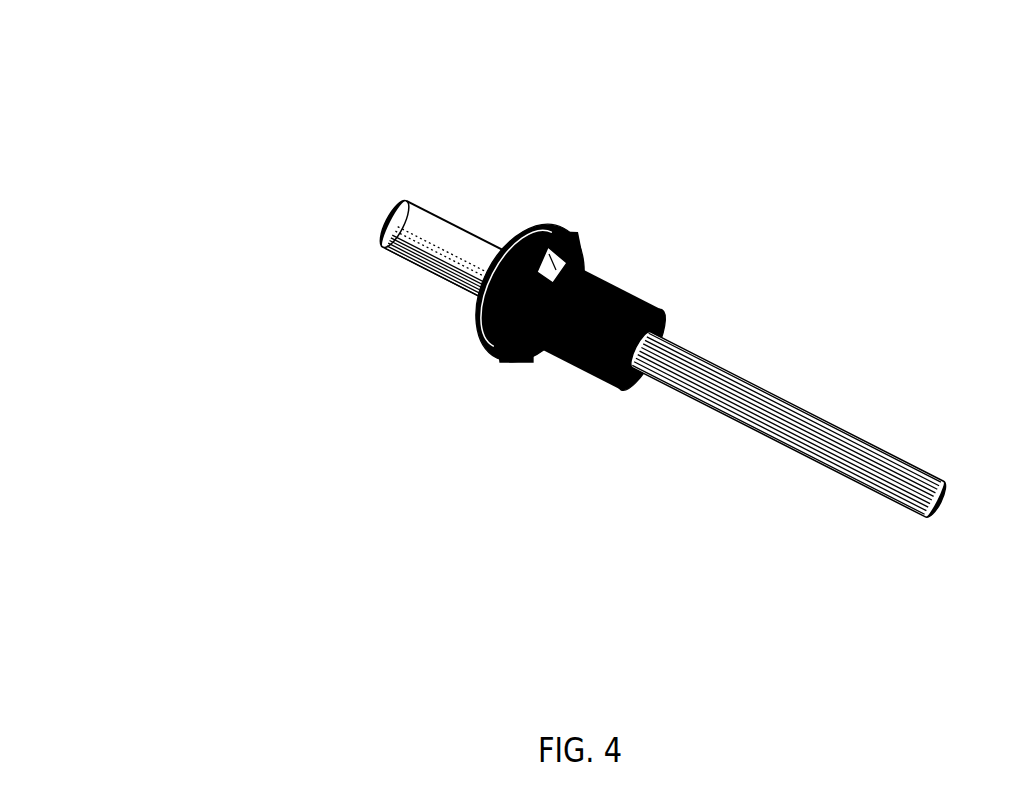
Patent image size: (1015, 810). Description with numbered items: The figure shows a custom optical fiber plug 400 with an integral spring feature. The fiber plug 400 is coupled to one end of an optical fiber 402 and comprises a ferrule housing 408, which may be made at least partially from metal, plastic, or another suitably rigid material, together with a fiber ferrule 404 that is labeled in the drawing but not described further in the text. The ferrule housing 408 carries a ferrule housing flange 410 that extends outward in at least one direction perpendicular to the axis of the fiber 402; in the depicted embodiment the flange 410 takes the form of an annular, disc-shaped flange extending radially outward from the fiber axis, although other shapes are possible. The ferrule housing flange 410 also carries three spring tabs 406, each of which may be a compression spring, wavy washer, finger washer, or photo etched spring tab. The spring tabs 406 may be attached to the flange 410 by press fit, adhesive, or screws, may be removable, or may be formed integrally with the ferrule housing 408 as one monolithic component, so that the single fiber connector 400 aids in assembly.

The custom optical fiber plug 400 is at (320, 117).
The optical fiber 402 is at (694, 420).
The fiber ferrule 404 is at (389, 272).
The spring tab 406 is at (572, 123).
The ferrule housing 408 is at (978, 280).
The ferrule housing flange 410 is at (467, 359).